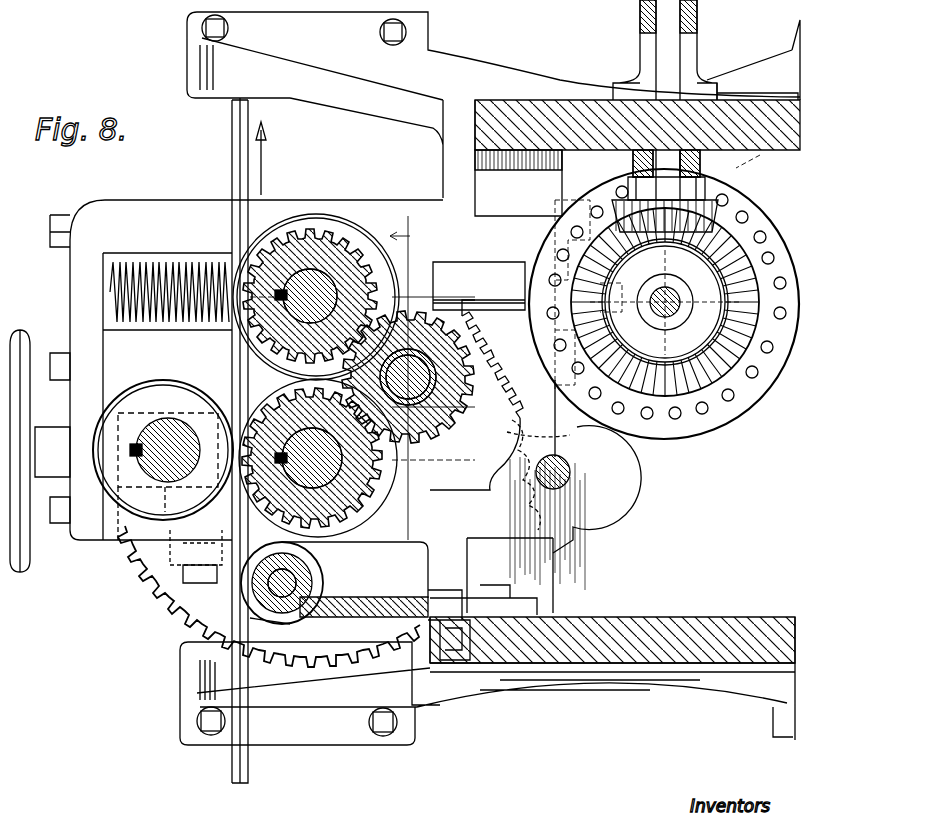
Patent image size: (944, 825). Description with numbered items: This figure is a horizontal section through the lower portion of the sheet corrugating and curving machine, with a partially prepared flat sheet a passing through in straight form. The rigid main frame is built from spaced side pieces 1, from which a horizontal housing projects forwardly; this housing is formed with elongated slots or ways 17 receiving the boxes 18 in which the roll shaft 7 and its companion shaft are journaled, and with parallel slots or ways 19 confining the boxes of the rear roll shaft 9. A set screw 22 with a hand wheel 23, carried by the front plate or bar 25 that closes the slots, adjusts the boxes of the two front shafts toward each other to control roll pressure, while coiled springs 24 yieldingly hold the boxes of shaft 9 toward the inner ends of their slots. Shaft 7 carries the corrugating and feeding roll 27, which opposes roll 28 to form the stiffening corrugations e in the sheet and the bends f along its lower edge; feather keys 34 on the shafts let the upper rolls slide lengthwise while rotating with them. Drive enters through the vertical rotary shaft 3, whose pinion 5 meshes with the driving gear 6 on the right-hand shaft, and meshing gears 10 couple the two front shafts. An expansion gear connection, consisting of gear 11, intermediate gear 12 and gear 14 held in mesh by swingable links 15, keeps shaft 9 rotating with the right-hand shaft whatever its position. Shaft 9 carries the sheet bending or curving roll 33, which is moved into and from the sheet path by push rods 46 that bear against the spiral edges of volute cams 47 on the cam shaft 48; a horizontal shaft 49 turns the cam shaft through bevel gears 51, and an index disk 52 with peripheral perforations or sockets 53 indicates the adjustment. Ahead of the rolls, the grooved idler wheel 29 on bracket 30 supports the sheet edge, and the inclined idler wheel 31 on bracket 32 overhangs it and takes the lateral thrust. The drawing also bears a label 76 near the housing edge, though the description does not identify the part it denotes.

The roll shaft 7 is at (745, 92).
The horizontal shaft 49 is at (672, 60).
The vertical bar 76 is at (175, 213).
The elongated slots or ways 19 is at (160, 268).
The coiled springs 24 is at (125, 270).
The front plates or bars 25 is at (70, 283).
The set screw 22 is at (55, 427).
The hand wheel 23 is at (20, 572).
The corrugating and feeding roll 27 is at (128, 520).
The side pieces 1 is at (165, 450).
The elongated slots or ways 17 is at (127, 400).
The boxes 18 is at (160, 380).
The feather keys 34 is at (265, 233).
The sheet bending or curving roll 33 is at (288, 225).
The gear 14 is at (318, 237).
The pinion 5 is at (312, 458).
The intermediate gear 12 is at (408, 383).
The meshing gears 10 is at (360, 440).
The gear 11 is at (350, 510).
The corrugating and feeding roll 28 is at (397, 526).
The swingable links 15 is at (330, 345).
The roll shaft 9 is at (463, 390).
The push rods 46 is at (468, 296).
The vertical rotary shaft 3 is at (562, 468).
The index disk 52 is at (728, 432).
The perforations or sockets 53 is at (650, 420).
The volute cams 47 is at (665, 302).
The cam shaft 48 is at (666, 316).
The bevel gears 51 is at (700, 215).
The thrust-receiving and guiding idler wheel 31 is at (320, 586).
The bracket 32 is at (358, 618).
The driving gear 6 is at (185, 600).
The bracket 30 is at (180, 557).
The sheet supporting and guiding idler wheel 29 is at (210, 583).
The partially prepared flat sheet a is at (235, 750).
The stiffening corrugations e is at (248, 768).
The curves or bends f is at (232, 780).